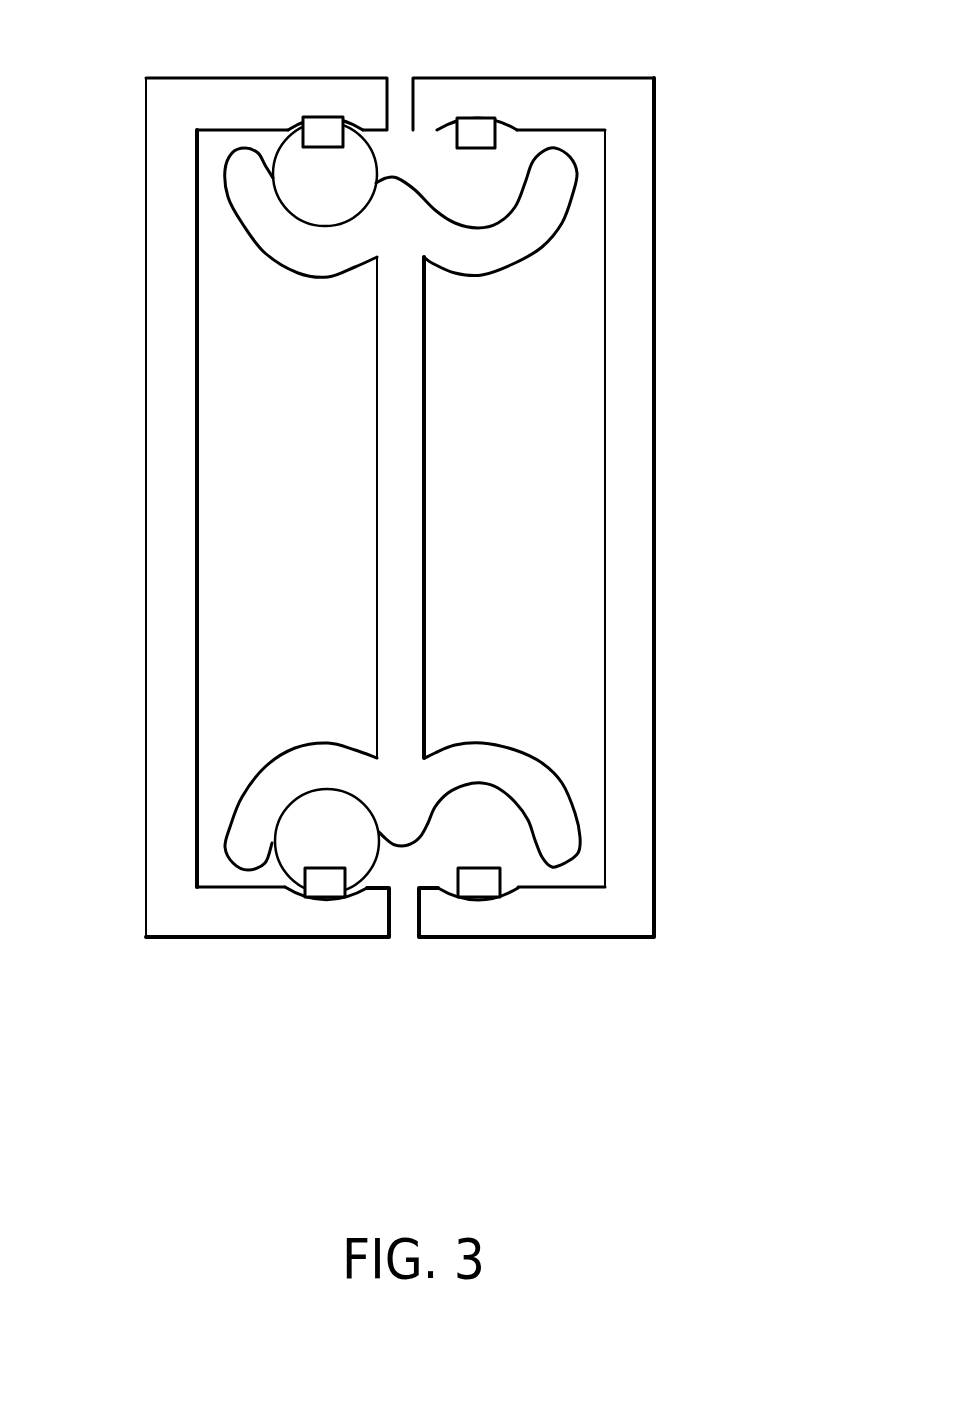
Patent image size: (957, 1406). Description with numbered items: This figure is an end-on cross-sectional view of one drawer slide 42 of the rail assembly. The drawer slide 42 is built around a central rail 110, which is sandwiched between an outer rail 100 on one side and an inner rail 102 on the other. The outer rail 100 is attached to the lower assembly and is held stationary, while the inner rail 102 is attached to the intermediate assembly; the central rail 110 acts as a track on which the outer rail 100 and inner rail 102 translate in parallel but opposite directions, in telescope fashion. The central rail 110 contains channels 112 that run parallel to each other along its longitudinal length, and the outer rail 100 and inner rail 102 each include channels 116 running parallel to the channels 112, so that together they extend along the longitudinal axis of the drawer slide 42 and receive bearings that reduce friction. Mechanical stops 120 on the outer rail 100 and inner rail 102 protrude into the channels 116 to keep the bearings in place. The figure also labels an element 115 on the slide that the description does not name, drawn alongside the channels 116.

The drawer slide 42 is at (740, 467).
The outer rail 100 is at (163, 485).
The inner rail 102 is at (630, 282).
The central rail 110 is at (400, 203).
The channels 112 is at (273, 865).
The spring arm 115 is at (482, 178).
The channels 116 is at (290, 127).
The mechanical stops 120 is at (476, 132).